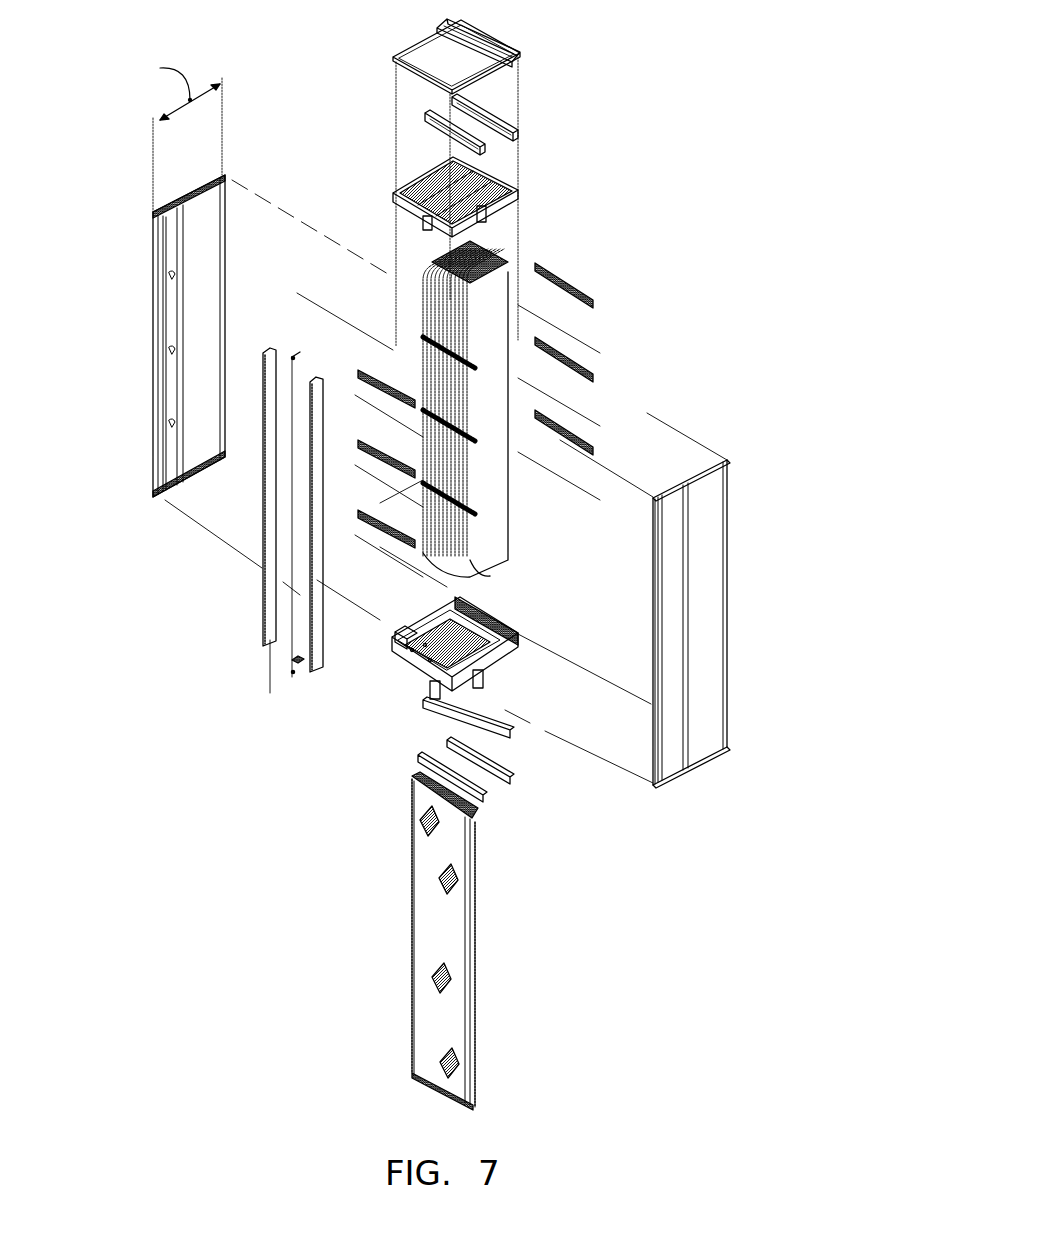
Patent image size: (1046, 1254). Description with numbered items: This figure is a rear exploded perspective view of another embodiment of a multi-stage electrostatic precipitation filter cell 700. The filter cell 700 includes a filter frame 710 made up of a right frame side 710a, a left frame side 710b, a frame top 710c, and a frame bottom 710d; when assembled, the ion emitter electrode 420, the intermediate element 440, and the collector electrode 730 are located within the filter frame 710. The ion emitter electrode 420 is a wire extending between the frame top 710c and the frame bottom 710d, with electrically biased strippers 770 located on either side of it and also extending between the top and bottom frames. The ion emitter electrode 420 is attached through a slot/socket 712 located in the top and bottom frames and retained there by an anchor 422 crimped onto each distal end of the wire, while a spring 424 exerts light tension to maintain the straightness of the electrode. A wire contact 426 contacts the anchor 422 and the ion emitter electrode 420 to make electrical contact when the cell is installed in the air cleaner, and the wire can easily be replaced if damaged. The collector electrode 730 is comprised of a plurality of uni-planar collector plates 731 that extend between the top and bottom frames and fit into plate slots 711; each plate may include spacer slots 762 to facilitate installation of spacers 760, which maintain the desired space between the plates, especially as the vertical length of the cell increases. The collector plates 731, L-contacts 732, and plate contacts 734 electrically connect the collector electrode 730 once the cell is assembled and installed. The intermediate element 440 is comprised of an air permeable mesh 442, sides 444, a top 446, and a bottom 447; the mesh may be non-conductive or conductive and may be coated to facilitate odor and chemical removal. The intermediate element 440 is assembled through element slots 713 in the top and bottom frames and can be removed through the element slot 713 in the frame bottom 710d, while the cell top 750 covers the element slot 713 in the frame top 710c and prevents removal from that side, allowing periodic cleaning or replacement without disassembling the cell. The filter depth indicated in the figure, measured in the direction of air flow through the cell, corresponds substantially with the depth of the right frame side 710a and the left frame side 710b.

The multi-stage electrostatic precipitation filter cell 700 is at (705, 85).
The filter frame 710 is at (768, 225).
The right frame side 710a is at (155, 270).
The left frame side 710b is at (727, 603).
The frame top 710c is at (525, 170).
The frame bottom 710d is at (517, 618).
The plate slots 711 is at (515, 215).
The slot/socket 712 is at (420, 214).
The element slots 713 is at (478, 652).
The collector electrode 730 is at (495, 530).
The collector plates 731 is at (488, 570).
The L-contacts 732 is at (514, 130).
The plate contacts 734 is at (483, 797).
The cell top 750 is at (423, 40).
The spacers 760 is at (587, 440).
The spacer slots 762 is at (508, 490).
The electrically biased strippers 770 is at (312, 537).
The ion emitter electrode 420 is at (293, 602).
The anchor 422 is at (292, 357).
The spring 424 is at (300, 357).
The wire contact 426 is at (295, 662).
The intermediate element 440 is at (317, 1033).
The air permeable mesh 442 is at (420, 988).
The sides 444 is at (467, 950).
The top 446 is at (417, 780).
The bottom 447 is at (430, 1088).